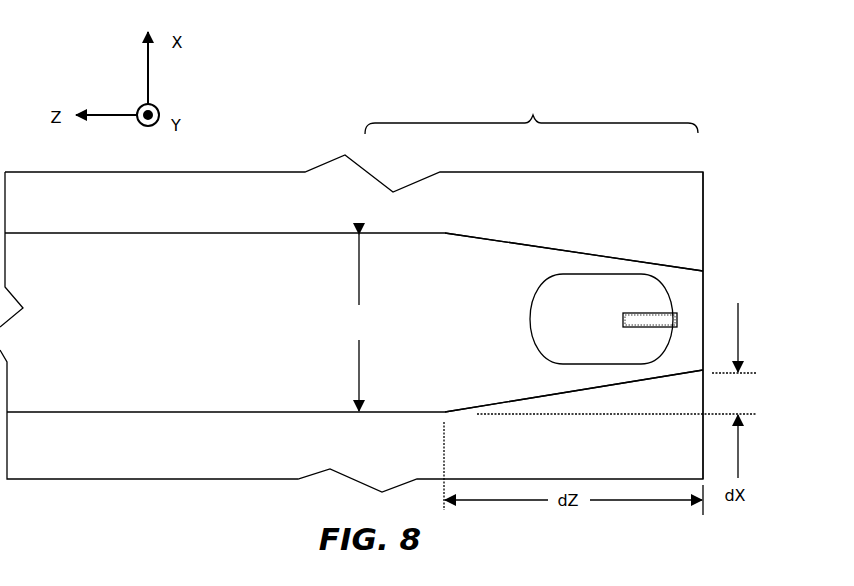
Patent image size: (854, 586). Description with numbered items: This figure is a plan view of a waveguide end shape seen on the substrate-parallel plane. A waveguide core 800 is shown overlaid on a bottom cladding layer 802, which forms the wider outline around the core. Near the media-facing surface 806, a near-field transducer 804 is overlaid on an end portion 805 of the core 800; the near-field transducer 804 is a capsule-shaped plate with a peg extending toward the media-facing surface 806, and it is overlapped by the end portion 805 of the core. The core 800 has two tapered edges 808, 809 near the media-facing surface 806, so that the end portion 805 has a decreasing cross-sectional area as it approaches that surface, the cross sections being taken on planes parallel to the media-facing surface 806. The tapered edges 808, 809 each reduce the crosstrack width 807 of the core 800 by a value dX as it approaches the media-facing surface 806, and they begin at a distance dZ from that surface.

The waveguide core 800 is at (166, 247).
The bottom cladding layer 802 is at (250, 186).
The near-field transducer 804 is at (617, 274).
The end portion 805 is at (531, 109).
The media-facing surface 806 is at (705, 219).
The crosstrack width 807 is at (360, 322).
The tapered edge 808 is at (681, 267).
The tapered edge 809 is at (628, 385).